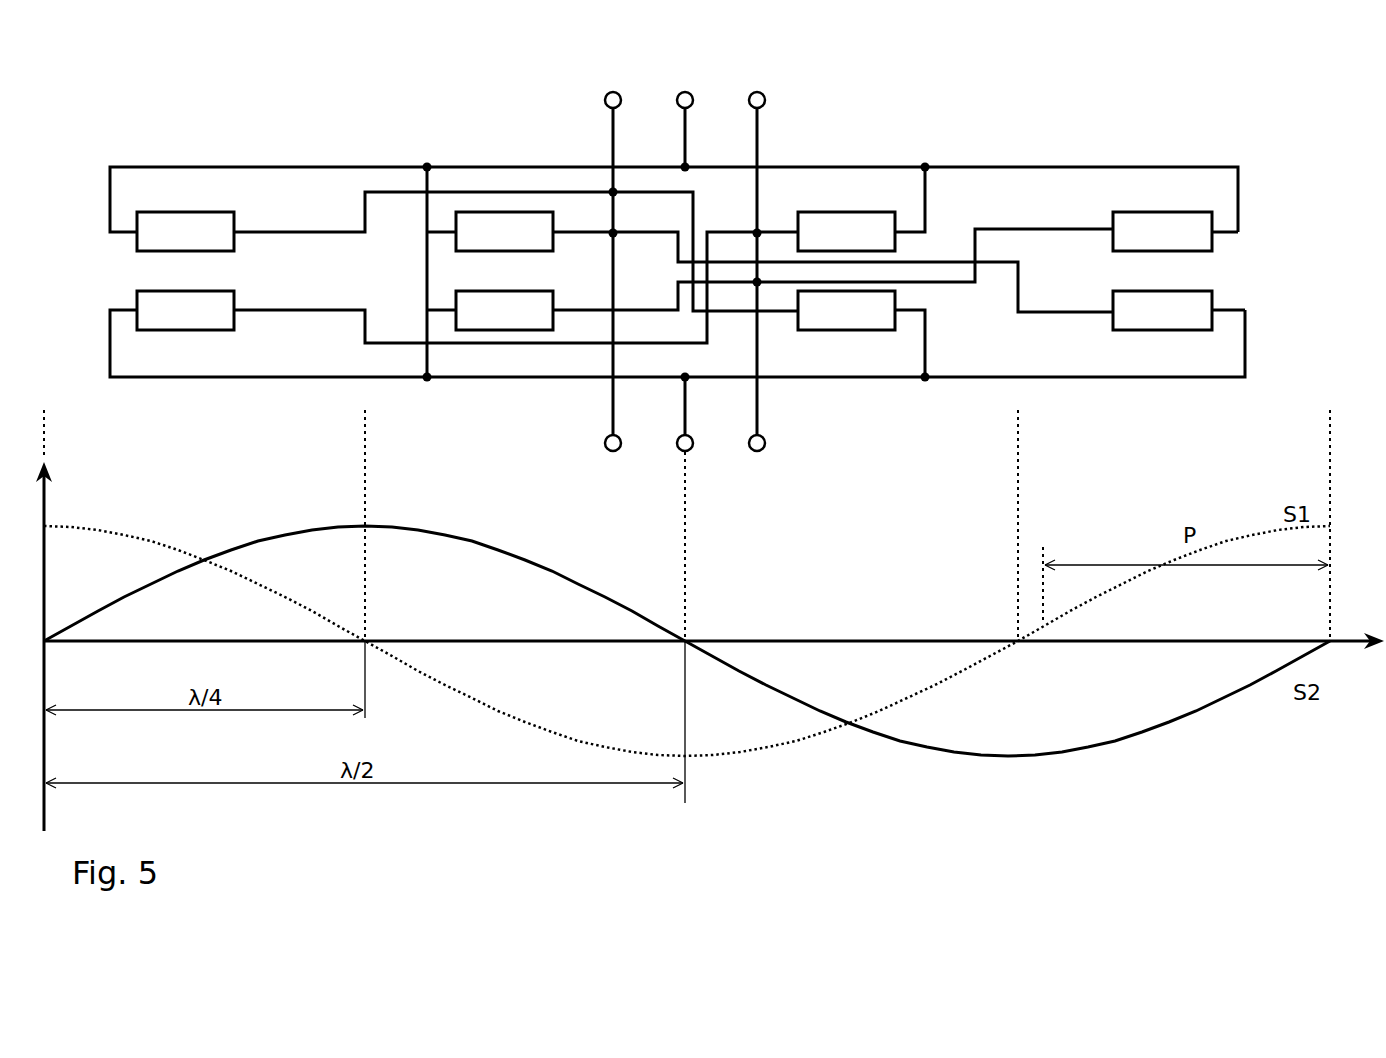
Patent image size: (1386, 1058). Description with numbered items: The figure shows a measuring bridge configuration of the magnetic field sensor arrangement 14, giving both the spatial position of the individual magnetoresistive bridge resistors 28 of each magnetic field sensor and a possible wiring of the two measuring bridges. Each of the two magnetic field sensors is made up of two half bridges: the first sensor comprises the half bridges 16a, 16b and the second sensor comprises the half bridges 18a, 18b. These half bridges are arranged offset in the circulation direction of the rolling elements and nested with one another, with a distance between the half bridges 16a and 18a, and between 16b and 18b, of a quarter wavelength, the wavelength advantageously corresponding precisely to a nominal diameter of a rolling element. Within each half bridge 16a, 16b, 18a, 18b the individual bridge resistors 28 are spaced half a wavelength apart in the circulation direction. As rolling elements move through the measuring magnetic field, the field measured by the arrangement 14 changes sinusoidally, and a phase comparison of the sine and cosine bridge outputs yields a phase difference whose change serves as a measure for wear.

The magnetic field sensor arrangement 14 is at (236, 133).
The half bridge of the first magnetic field sensor 16a is at (296, 235).
The half bridge of the first magnetic field sensor 16b is at (340, 309).
The half bridge of the second magnetic field sensor 18a is at (1058, 313).
The half bridge of the second magnetic field sensor 18b is at (1060, 229).
The magnetoresistive bridge resistor 28 is at (137, 251).